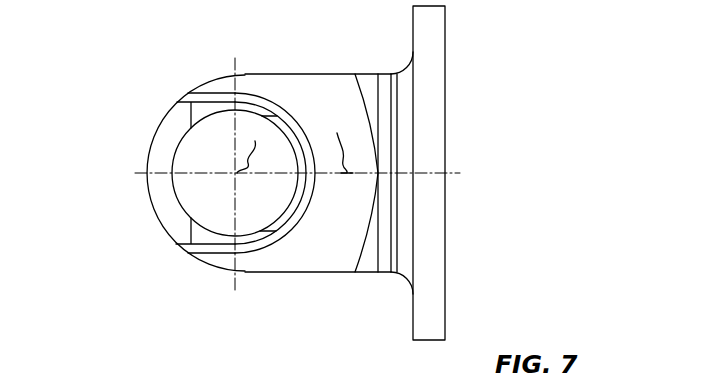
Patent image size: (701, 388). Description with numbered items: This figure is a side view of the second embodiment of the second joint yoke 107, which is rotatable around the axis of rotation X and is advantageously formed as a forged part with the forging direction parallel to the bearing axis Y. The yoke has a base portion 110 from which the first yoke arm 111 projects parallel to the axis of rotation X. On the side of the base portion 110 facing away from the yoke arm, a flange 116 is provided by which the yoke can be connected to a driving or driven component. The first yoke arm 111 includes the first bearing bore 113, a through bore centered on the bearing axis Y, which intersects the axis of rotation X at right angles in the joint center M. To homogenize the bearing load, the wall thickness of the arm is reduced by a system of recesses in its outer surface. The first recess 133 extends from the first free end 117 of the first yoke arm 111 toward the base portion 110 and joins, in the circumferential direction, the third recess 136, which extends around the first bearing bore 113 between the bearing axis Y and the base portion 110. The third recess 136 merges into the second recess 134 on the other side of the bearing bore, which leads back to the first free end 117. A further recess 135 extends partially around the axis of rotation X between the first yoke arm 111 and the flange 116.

The second joint yoke 107 is at (537, 88).
The base portion 110 is at (382, 183).
The first yoke arm 111 is at (309, 252).
The first bearing bore 113 is at (218, 204).
The flange 116 is at (428, 133).
The first free end 117 is at (134, 190).
The first recess 133 is at (228, 91).
The second recess 134 is at (223, 256).
The third recess 135 is at (389, 93).
The third recess 136 is at (312, 128).